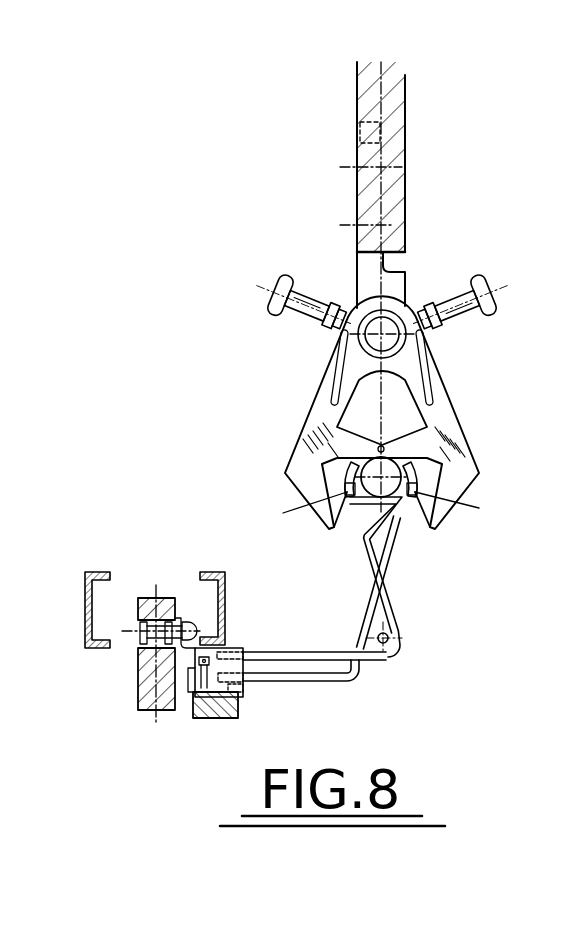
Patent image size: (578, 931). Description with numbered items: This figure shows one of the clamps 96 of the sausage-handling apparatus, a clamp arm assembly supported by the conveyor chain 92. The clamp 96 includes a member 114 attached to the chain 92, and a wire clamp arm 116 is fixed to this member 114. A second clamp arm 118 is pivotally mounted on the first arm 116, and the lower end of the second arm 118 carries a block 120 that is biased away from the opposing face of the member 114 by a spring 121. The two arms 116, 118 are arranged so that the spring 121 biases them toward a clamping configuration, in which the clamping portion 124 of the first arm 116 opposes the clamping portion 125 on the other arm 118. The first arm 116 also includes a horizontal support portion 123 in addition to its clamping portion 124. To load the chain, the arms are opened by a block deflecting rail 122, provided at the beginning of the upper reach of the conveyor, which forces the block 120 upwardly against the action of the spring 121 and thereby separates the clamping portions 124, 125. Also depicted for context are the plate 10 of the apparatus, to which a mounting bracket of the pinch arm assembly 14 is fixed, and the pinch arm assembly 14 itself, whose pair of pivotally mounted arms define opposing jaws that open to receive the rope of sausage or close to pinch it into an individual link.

The plate 10 is at (397, 157).
The pinch arm assembly 14 is at (307, 407).
The chain 92 is at (137, 638).
The clamp 96 is at (448, 650).
The member 114 is at (230, 648).
The wire clamp arm 116 is at (322, 652).
The second clamp arm 118 is at (320, 681).
The block 120 is at (240, 688).
The spring 121 is at (192, 692).
The block deflecting rail 122 is at (222, 703).
The horizontal support portion 123 is at (402, 506).
The clamping portion 124 is at (342, 495).
The clamping portion 125 is at (420, 494).